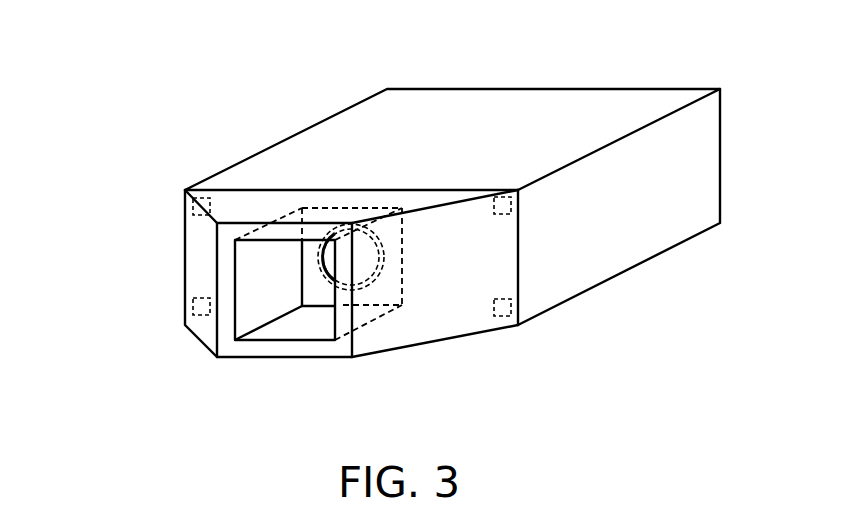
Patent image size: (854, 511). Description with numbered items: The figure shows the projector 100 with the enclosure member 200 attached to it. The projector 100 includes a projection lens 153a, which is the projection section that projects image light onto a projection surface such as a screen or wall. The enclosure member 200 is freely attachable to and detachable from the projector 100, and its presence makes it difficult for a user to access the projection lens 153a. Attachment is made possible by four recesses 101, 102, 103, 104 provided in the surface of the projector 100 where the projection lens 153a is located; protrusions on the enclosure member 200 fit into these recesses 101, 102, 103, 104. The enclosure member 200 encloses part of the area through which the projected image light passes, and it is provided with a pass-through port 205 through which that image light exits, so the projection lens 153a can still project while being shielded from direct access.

The projector 100 is at (558, 103).
The recess 101 is at (190, 208).
The recess 102 is at (190, 310).
The recess 103 is at (513, 205).
The recess 104 is at (515, 313).
The projection lens 153a is at (318, 258).
The enclosure member 200 is at (410, 323).
The pass-through port 205 is at (267, 297).